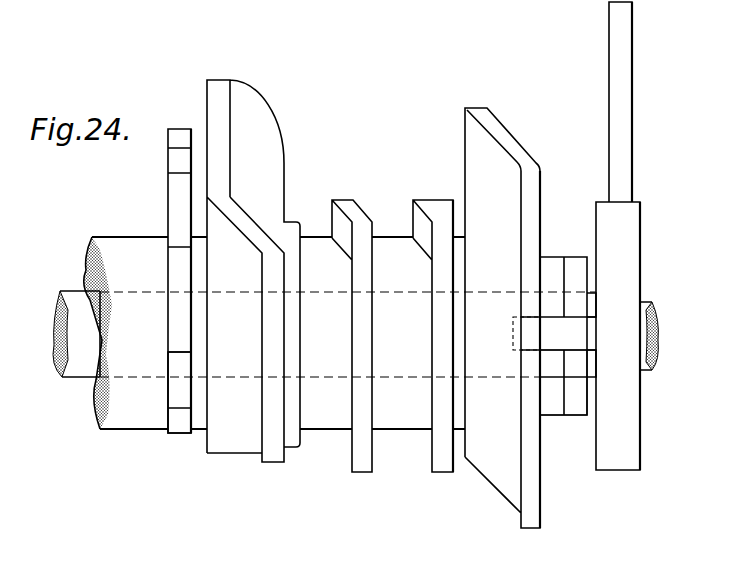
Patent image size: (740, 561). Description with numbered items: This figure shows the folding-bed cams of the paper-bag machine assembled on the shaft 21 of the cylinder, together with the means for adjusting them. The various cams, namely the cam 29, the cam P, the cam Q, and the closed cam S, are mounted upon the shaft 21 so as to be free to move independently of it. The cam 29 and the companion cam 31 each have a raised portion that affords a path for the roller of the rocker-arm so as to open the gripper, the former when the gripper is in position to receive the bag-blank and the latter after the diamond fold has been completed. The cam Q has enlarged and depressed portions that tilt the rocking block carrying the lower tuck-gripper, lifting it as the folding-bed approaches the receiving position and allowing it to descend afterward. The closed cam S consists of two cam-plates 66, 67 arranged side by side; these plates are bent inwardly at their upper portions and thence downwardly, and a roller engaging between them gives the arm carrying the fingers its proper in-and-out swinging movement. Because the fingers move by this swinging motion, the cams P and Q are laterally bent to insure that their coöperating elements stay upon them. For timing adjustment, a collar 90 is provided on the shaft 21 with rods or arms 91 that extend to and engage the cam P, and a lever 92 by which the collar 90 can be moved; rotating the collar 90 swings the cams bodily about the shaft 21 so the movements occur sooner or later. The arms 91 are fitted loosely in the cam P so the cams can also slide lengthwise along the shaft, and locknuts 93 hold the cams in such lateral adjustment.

The shaft 21 is at (82, 358).
The cam 29 is at (181, 237).
The cam 31 is at (177, 393).
The cam-plate 66 is at (367, 460).
The cam-plate 67 is at (446, 460).
The collar 90 is at (620, 461).
The rods or arms 91 is at (578, 360).
The lever 92 is at (623, 120).
The locknuts 93 is at (576, 262).
The cam Q is at (264, 160).
The cam P is at (502, 315).
The closed cam S is at (410, 412).